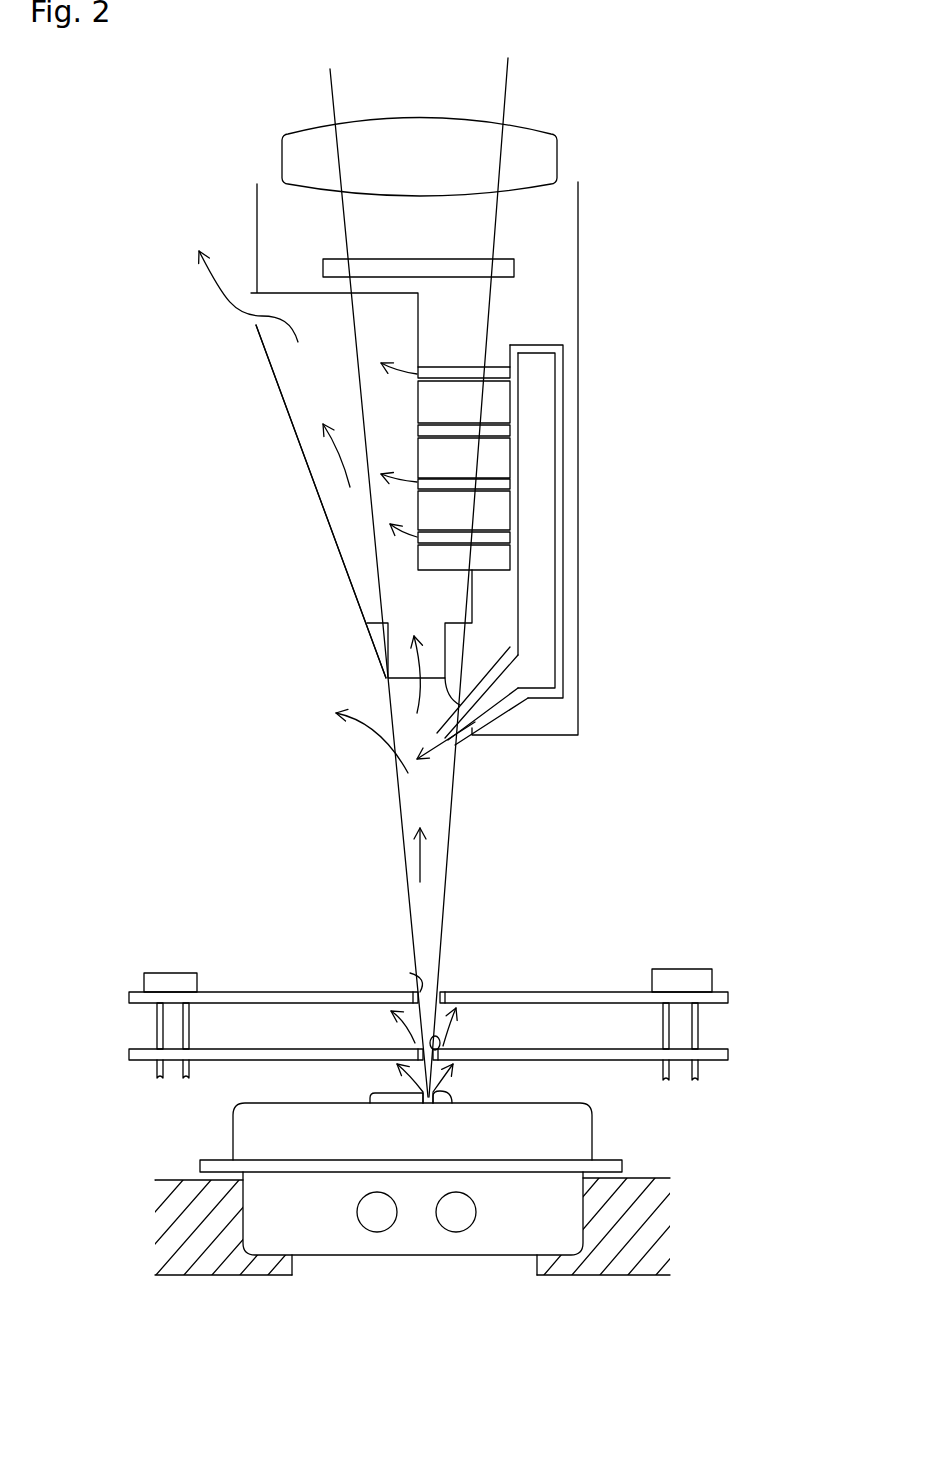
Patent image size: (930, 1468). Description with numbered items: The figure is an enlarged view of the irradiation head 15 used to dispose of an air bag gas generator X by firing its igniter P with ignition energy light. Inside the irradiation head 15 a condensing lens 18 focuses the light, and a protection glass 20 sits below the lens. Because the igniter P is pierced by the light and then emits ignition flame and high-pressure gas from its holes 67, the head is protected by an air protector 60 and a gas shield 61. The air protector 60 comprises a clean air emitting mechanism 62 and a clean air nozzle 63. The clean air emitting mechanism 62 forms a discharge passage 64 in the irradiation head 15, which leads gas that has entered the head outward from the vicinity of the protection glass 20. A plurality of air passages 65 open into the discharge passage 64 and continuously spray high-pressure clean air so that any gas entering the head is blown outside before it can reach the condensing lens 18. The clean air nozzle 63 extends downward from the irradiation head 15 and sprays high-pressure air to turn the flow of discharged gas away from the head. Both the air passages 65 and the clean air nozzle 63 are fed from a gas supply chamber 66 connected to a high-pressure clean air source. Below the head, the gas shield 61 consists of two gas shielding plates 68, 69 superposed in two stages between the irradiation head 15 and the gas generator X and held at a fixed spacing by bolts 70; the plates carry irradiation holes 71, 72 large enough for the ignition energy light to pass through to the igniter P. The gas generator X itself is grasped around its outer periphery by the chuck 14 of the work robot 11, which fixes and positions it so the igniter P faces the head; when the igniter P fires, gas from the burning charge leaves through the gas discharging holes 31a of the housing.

The condensing lens 18 is at (450, 135).
The protection glass 20 is at (388, 268).
The irradiation head 15 is at (586, 236).
The air passages 65 is at (467, 373).
The gas supply chamber 66 is at (547, 603).
The clean air nozzle 63 is at (506, 715).
The clean air emitting mechanism 62 is at (333, 545).
The air protector 60 is at (292, 436).
The discharge passage 64 is at (298, 358).
The gas shield 61 is at (437, 1001).
The gas shielding plate 68 is at (517, 996).
The gas shielding plate 69 is at (565, 1058).
The bolts 70 is at (166, 987).
The irradiation hole 71 is at (410, 973).
The irradiation hole 72 is at (440, 1040).
The igniter P is at (378, 1098).
The holes 67 is at (432, 1103).
The gas generator X is at (411, 1212).
The gas discharging holes 31a is at (465, 1215).
The work robot 11 is at (584, 1280).
The chuck 14 is at (645, 1262).